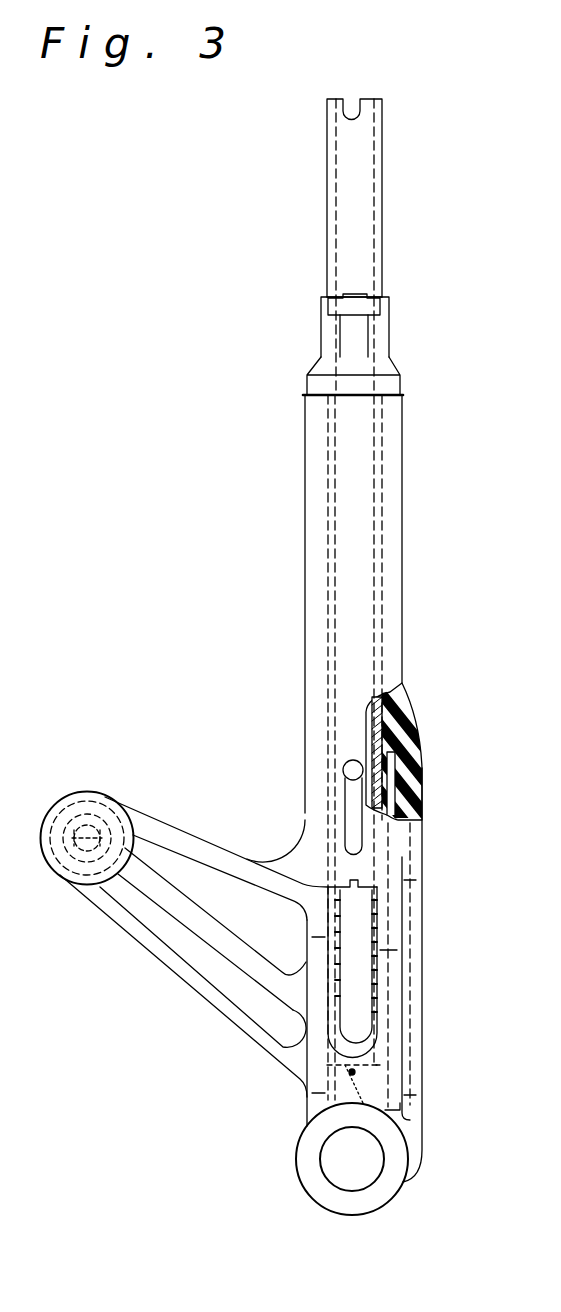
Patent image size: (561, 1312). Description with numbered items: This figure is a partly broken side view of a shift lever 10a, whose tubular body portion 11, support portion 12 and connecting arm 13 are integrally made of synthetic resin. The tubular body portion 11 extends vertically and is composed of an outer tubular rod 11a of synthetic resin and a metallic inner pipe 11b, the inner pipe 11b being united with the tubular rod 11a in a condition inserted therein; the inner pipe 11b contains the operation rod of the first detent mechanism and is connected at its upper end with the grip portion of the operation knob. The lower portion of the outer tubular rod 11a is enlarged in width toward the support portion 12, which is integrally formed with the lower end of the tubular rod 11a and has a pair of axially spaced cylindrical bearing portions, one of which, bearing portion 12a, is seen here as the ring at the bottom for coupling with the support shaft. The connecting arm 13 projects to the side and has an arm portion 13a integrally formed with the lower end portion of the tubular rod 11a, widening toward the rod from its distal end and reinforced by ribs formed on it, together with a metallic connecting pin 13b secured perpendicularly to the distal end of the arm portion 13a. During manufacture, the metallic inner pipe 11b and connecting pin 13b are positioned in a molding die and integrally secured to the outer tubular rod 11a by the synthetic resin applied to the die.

The shift lever 10a is at (417, 363).
The tubular body portion 11 is at (405, 523).
The outer tubular rod 11a is at (392, 630).
The metallic inner pipe 11b is at (362, 208).
The support portion 12 is at (373, 1105).
The cylindrical bearing portion 12a is at (310, 1150).
The connecting arm 13 is at (200, 840).
The arm portion 13a is at (185, 972).
The metallic connecting pin 13b is at (108, 802).